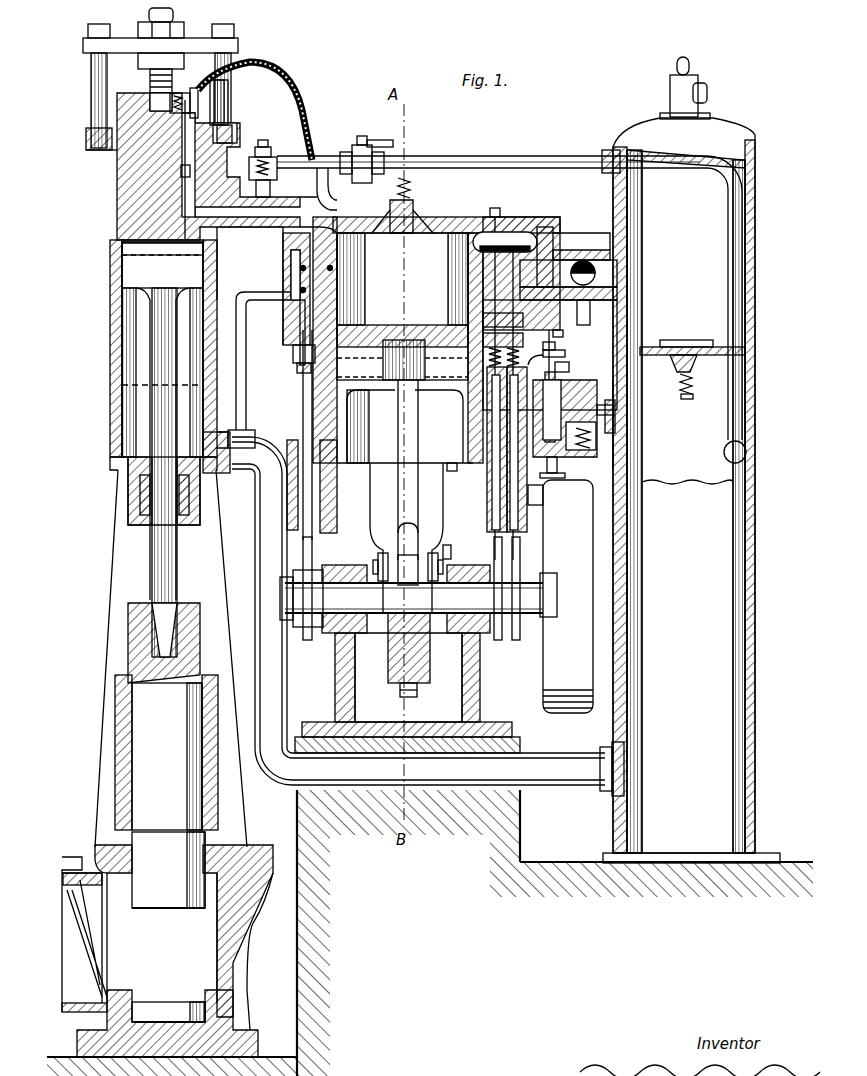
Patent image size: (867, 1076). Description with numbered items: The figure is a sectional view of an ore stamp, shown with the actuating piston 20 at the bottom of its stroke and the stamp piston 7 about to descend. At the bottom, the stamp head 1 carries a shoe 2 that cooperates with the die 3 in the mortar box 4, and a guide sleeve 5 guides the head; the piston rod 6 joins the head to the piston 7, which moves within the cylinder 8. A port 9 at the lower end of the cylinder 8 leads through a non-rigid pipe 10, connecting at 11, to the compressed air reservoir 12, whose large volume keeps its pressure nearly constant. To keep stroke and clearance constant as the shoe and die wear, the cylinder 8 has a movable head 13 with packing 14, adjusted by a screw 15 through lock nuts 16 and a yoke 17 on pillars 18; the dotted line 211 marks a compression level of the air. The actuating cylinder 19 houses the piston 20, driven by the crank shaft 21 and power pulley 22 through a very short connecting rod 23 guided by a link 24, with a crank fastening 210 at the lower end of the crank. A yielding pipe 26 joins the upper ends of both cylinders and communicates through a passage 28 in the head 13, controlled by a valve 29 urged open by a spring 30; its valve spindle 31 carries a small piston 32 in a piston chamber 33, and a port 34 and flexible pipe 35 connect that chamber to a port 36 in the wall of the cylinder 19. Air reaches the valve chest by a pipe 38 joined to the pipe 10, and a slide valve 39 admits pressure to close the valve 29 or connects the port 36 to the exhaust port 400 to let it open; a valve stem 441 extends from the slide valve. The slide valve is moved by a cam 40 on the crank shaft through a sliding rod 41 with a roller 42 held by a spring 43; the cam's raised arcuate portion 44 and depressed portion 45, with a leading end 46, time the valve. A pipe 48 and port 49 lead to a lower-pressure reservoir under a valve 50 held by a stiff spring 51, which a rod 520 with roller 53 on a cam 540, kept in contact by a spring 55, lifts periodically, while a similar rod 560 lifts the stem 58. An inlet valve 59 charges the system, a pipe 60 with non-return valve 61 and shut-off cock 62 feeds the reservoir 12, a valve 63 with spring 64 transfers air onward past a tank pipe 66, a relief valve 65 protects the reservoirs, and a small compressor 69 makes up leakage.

The stamp head 1 is at (152, 770).
The shoe 2 is at (157, 852).
The die 3 is at (165, 1003).
The mortar box 4 is at (166, 922).
The guide sleeve 5 is at (215, 795).
The piston rod 6 is at (158, 474).
The stamp piston 7 is at (140, 268).
The cylinder 8 is at (112, 340).
The port 9 is at (205, 443).
The pipe 10 is at (262, 500).
The pipe connection 11 is at (602, 762).
The compressed air reservoir 12 is at (660, 565).
The movable head 13 is at (100, 148).
The packing 14 is at (88, 130).
The screw 15 is at (173, 18).
The lock nuts 16 is at (176, 48).
The yoke 17 is at (85, 46).
The pillars 18 is at (92, 84).
The actuating cylinder 19 is at (118, 449).
The actuating piston 20 is at (445, 330).
The crank shaft 21 is at (462, 588).
The power pulley 22 is at (568, 596).
The connecting rod 23 is at (400, 550).
The link 24 is at (180, 228).
The pipe 26 is at (332, 192).
The recess or passage 28 is at (230, 229).
The valve 29 is at (222, 260).
The spring 30 is at (252, 66).
The valve spindle 31 is at (200, 163).
The small piston 32 is at (200, 105).
The piston chamber 33 is at (230, 126).
The port 34 is at (212, 96).
The flexible pipe 35 is at (305, 104).
The port 36 is at (345, 262).
The pipe 38 is at (247, 400).
The slide valve 39 is at (291, 300).
The cam 40 is at (563, 372).
The sliding rod 41 is at (548, 350).
The roller 42 is at (560, 345).
The spring 43 is at (295, 410).
The raised arcuate portion 44 is at (566, 476).
The depressed portion 45 is at (600, 450).
The leading end 46 is at (626, 420).
The pipe 48 is at (573, 298).
The port 49 is at (565, 258).
The valve 50 is at (562, 240).
The spring 51 is at (474, 252).
The roller 53 is at (441, 550).
The spring 55 is at (458, 398).
The stem 58 is at (520, 226).
The inlet valve 59 is at (408, 234).
The pipe 60 is at (477, 158).
The non-return valve 61 is at (268, 156).
The shut-off cock 62 is at (370, 145).
The valve 63 is at (676, 342).
The spring 64 is at (686, 393).
The relief valve 65 is at (700, 95).
The pipe 66 is at (648, 358).
The compressor 69 is at (582, 455).
The nut 210 is at (385, 665).
The dotted line 211 is at (125, 250).
The exhaust port 400 is at (312, 290).
The valve stem 441 is at (300, 360).
The rod 520 is at (475, 530).
The cam 540 is at (499, 640).
The rod 560 is at (556, 504).